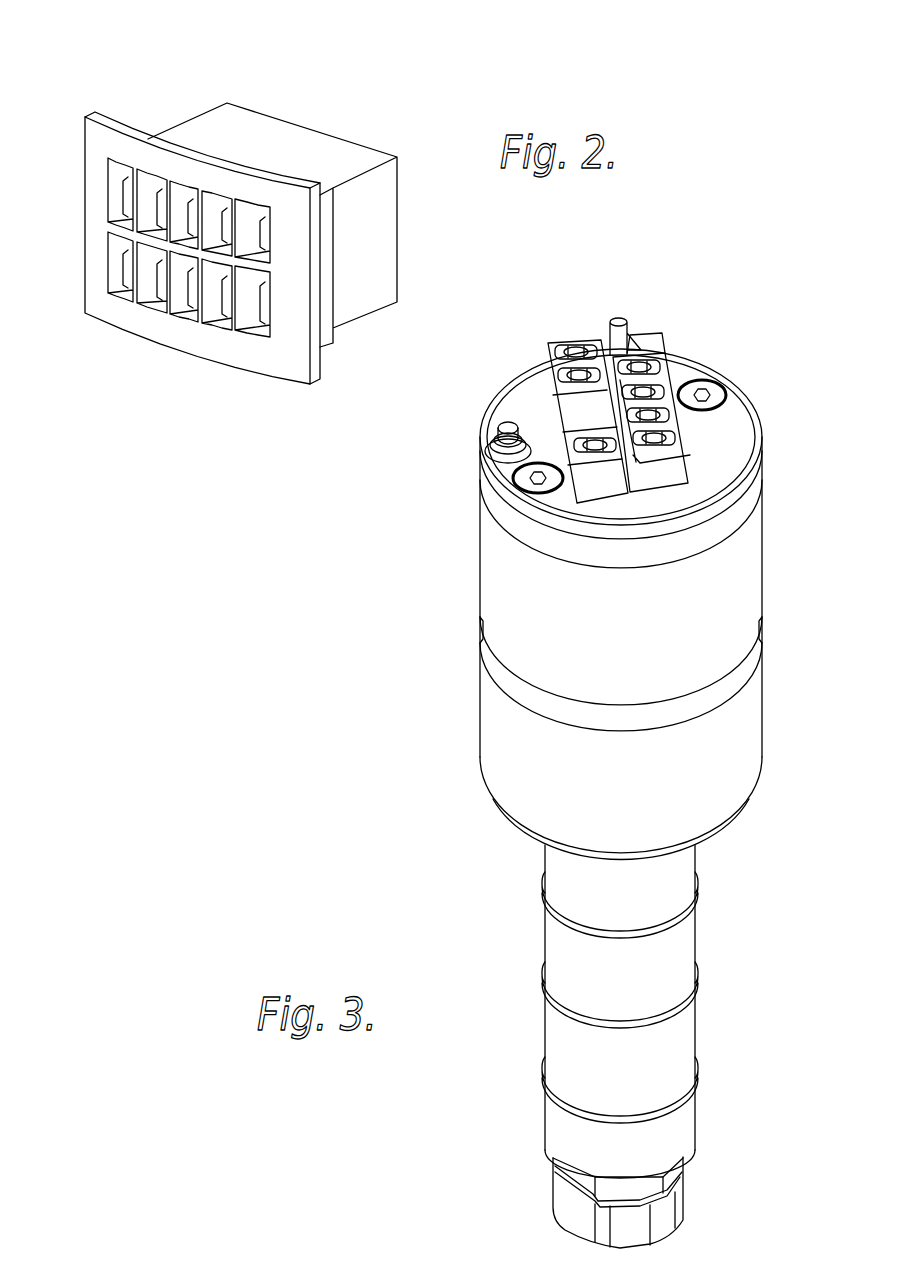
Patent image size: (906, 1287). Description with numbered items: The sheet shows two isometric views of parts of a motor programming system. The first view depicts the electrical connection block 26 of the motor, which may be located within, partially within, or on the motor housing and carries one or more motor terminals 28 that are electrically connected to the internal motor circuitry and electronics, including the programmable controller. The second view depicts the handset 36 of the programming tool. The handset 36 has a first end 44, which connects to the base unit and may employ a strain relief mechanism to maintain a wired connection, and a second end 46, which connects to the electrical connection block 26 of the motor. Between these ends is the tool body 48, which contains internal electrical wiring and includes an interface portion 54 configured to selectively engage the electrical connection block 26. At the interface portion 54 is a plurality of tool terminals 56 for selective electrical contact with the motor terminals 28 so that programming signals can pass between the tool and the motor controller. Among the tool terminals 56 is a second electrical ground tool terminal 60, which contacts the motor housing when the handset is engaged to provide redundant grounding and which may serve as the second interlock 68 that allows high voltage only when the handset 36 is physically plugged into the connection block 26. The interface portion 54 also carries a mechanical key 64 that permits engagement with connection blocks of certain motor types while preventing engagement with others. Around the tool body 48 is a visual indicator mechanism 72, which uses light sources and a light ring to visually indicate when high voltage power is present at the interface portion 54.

In FIG. 2, the electrical connection block 26 is at (70, 128).
In FIG. 2, the motor terminals 28 is at (116, 209).
In FIG. 3, the handset 36 is at (493, 890).
In FIG. 3, the first end 44 is at (530, 1186).
In FIG. 3, the second end 46 is at (694, 326).
In FIG. 3, the tool body 48 is at (500, 793).
In FIG. 3, the interface portion 54 is at (530, 361).
In FIG. 3, the tool terminals 56 is at (704, 439).
In FIG. 3, the second electrical ground tool terminal 60 is at (497, 443).
In FIG. 3, the mechanical key 64 is at (617, 324).
In FIG. 3, the second interlock 68 is at (494, 426).
In FIG. 3, the visual indicator mechanism 72 is at (480, 643).